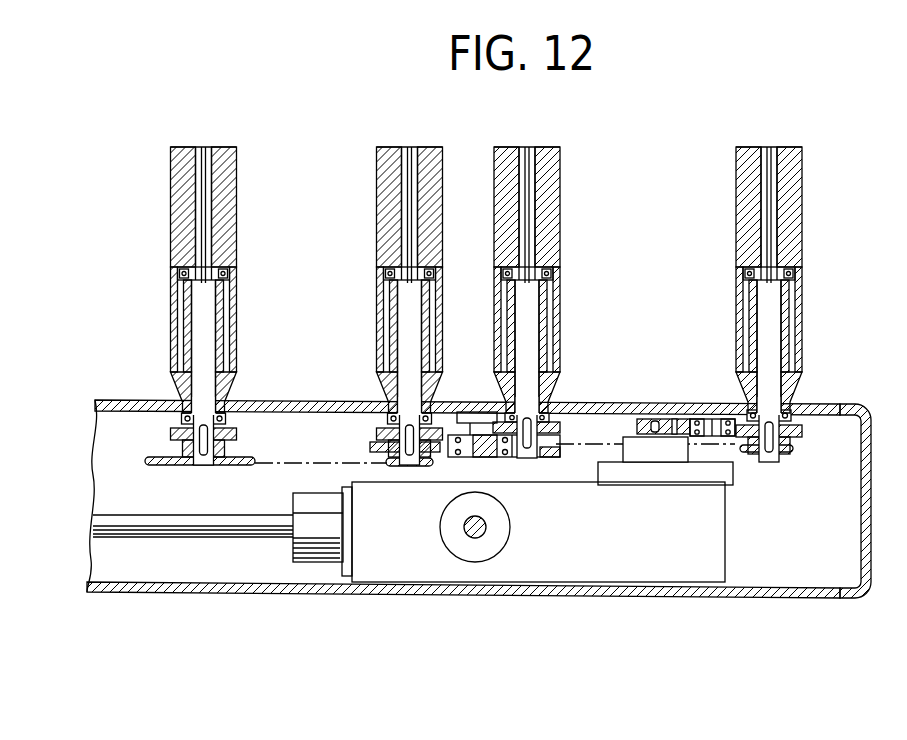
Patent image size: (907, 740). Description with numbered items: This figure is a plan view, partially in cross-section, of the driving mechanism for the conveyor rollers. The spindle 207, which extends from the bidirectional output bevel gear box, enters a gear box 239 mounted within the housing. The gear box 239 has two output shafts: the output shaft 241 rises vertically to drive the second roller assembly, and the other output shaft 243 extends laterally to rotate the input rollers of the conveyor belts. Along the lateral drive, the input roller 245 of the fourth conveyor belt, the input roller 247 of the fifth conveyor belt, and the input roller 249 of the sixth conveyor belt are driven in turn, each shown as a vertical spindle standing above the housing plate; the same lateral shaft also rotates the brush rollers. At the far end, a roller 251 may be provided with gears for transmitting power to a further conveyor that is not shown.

The spindle 207 is at (198, 527).
The gear box 239 is at (655, 551).
The output shaft 241 is at (487, 524).
The output shaft 243 is at (652, 419).
The input roller 245 is at (228, 217).
The input roller 247 is at (388, 180).
The input roller 249 is at (548, 170).
The roller 251 is at (787, 173).